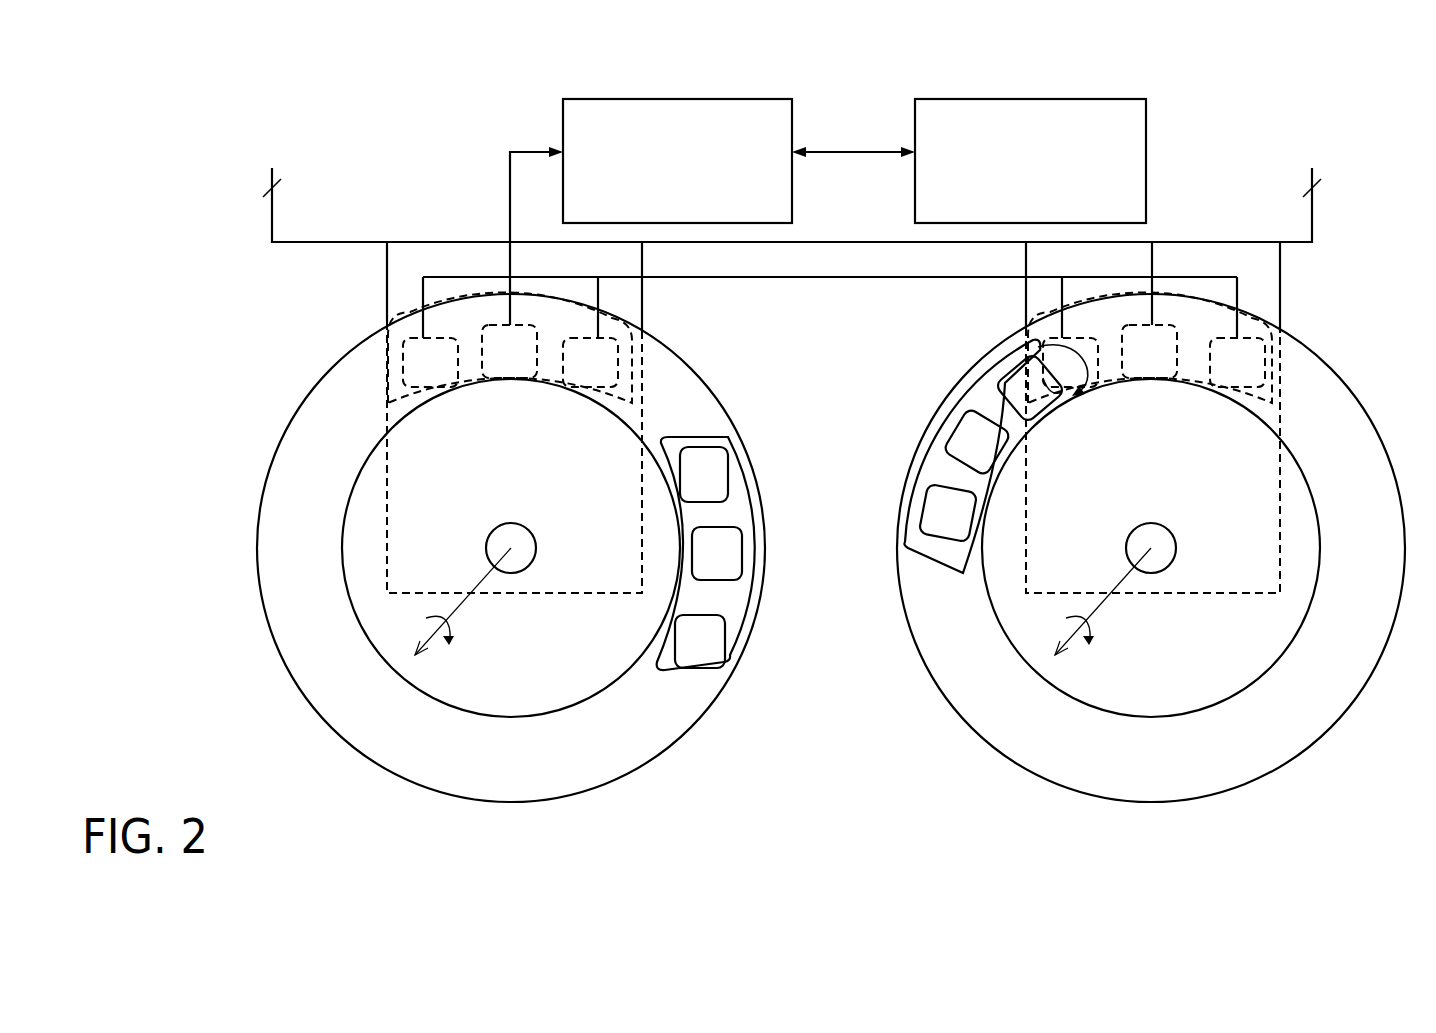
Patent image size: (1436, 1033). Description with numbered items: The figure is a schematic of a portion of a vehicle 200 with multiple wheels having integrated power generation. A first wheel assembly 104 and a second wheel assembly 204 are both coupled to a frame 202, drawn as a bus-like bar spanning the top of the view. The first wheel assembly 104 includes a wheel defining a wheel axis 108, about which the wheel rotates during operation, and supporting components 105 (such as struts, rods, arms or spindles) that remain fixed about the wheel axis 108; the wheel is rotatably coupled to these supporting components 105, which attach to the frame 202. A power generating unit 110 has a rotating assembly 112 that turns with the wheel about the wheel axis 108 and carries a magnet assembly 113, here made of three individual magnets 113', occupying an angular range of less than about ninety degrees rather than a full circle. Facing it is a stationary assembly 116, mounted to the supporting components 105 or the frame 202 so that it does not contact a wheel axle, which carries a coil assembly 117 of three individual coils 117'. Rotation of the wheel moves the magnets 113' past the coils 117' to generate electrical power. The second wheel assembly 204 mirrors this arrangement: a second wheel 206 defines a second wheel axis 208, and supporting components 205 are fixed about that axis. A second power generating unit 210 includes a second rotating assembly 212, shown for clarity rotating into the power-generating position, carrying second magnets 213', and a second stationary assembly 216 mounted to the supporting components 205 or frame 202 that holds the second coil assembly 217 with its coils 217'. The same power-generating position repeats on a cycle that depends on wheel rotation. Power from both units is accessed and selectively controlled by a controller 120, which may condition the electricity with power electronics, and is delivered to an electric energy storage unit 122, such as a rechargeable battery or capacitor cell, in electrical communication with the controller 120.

The vehicle 200 is at (189, 97).
The first wheel assembly 104 is at (275, 322).
The second wheel assembly 204 is at (1132, 522).
The frame 202 is at (289, 244).
The controller 120 is at (769, 99).
The electric energy storage unit 122 is at (1105, 99).
The supporting components 105 is at (646, 328).
The supporting components 205 is at (1281, 292).
The second wheel 206 is at (1356, 408).
The wheel axis 108 is at (482, 620).
The second wheel axis 208 is at (1115, 620).
The power generating unit 110 is at (752, 463).
The rotating assembly 112 is at (731, 439).
The magnet assembly 113 is at (756, 590).
The magnets 113' is at (764, 551).
The stationary assembly 116 is at (480, 315).
The coil assembly 117 is at (454, 380).
The coils 117' is at (533, 380).
The second power generating unit 210 is at (959, 447).
The second rotating assembly 212 is at (907, 512).
The second magnets 213' is at (953, 448).
The second stationary assembly 216 is at (1195, 313).
The second coil assembly 217 is at (1210, 380).
The second coils 217' is at (1171, 380).